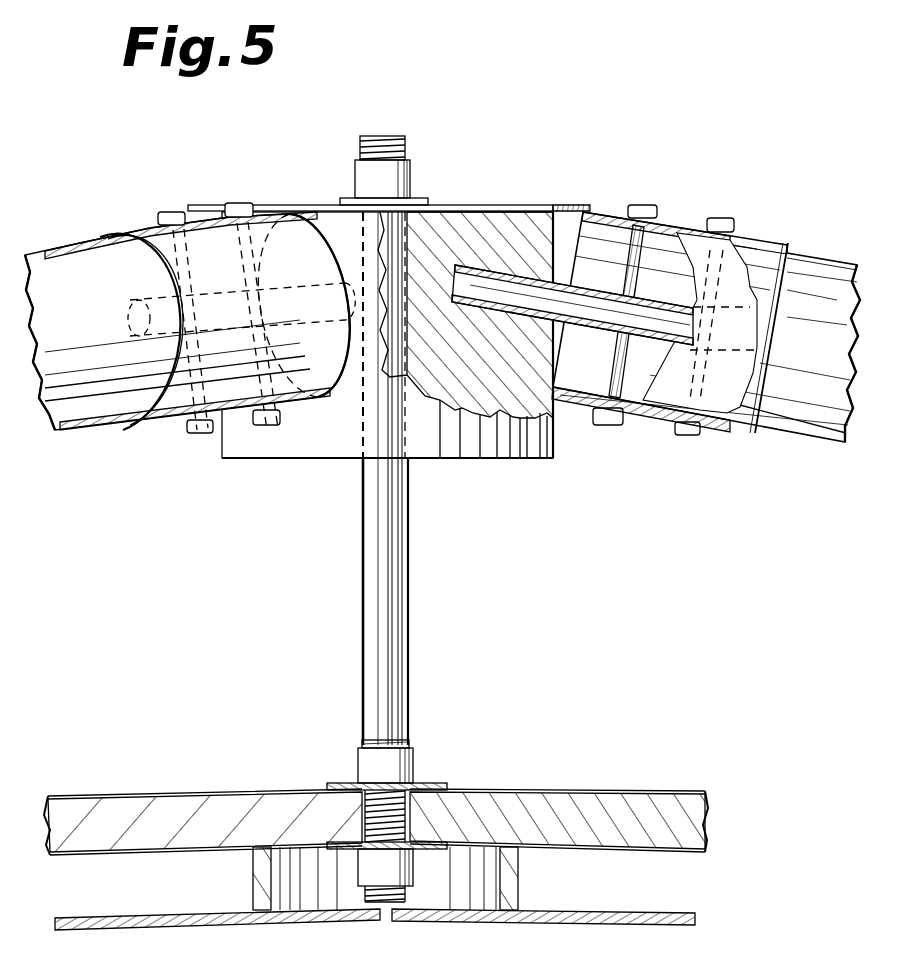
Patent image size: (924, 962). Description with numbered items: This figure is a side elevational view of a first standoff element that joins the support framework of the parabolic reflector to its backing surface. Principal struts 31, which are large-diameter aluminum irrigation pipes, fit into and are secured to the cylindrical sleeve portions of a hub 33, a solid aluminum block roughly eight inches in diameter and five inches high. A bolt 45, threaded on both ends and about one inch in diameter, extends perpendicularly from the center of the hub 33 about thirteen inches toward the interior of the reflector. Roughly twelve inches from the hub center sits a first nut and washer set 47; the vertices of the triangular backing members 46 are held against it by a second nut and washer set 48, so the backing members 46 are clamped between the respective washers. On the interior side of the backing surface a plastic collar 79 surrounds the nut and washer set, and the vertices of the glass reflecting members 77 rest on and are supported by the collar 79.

The principal strut 31 is at (95, 423).
The hub 33 is at (300, 442).
The bolt 45 is at (375, 605).
The triangular backing member 46 is at (190, 805).
The first nut and washer set 47 is at (418, 772).
The second nut and washer set 48 is at (420, 855).
The reflecting member 77 is at (218, 922).
The collar 79 is at (512, 880).